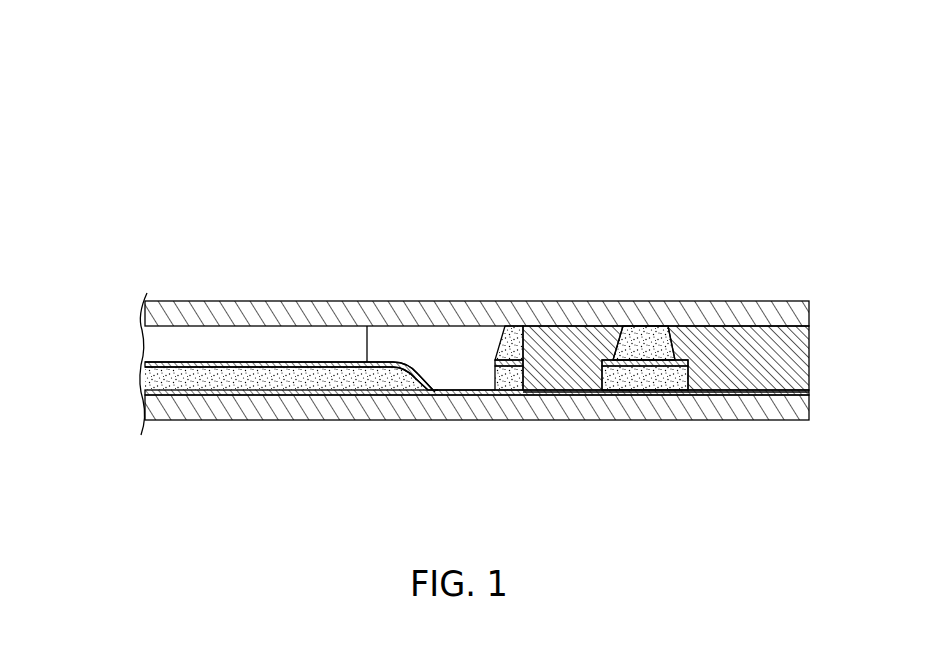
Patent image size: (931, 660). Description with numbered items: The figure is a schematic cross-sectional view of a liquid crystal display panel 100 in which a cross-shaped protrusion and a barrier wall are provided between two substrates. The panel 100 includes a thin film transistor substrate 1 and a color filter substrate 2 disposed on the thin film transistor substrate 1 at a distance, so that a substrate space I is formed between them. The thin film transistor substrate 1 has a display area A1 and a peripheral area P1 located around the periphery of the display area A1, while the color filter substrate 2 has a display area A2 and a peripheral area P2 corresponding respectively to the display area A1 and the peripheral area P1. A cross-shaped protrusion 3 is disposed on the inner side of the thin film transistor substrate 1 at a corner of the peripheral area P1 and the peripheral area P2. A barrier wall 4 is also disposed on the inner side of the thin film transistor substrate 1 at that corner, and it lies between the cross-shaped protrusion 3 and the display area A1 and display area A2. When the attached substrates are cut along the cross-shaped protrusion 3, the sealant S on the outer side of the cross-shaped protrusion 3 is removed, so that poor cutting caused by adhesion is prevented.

The liquid crystal display panel 100 is at (127, 108).
The thin film transistor substrate 1 is at (710, 395).
The color filter substrate 2 is at (733, 312).
The cross-shaped protrusion 3 is at (643, 330).
The barrier wall 4 is at (515, 388).
The sealant S is at (758, 395).
The display area A1 is at (273, 390).
The display area A2 is at (260, 302).
The substrate space I is at (457, 337).
The peripheral area P1 is at (560, 393).
The peripheral area P2 is at (550, 312).